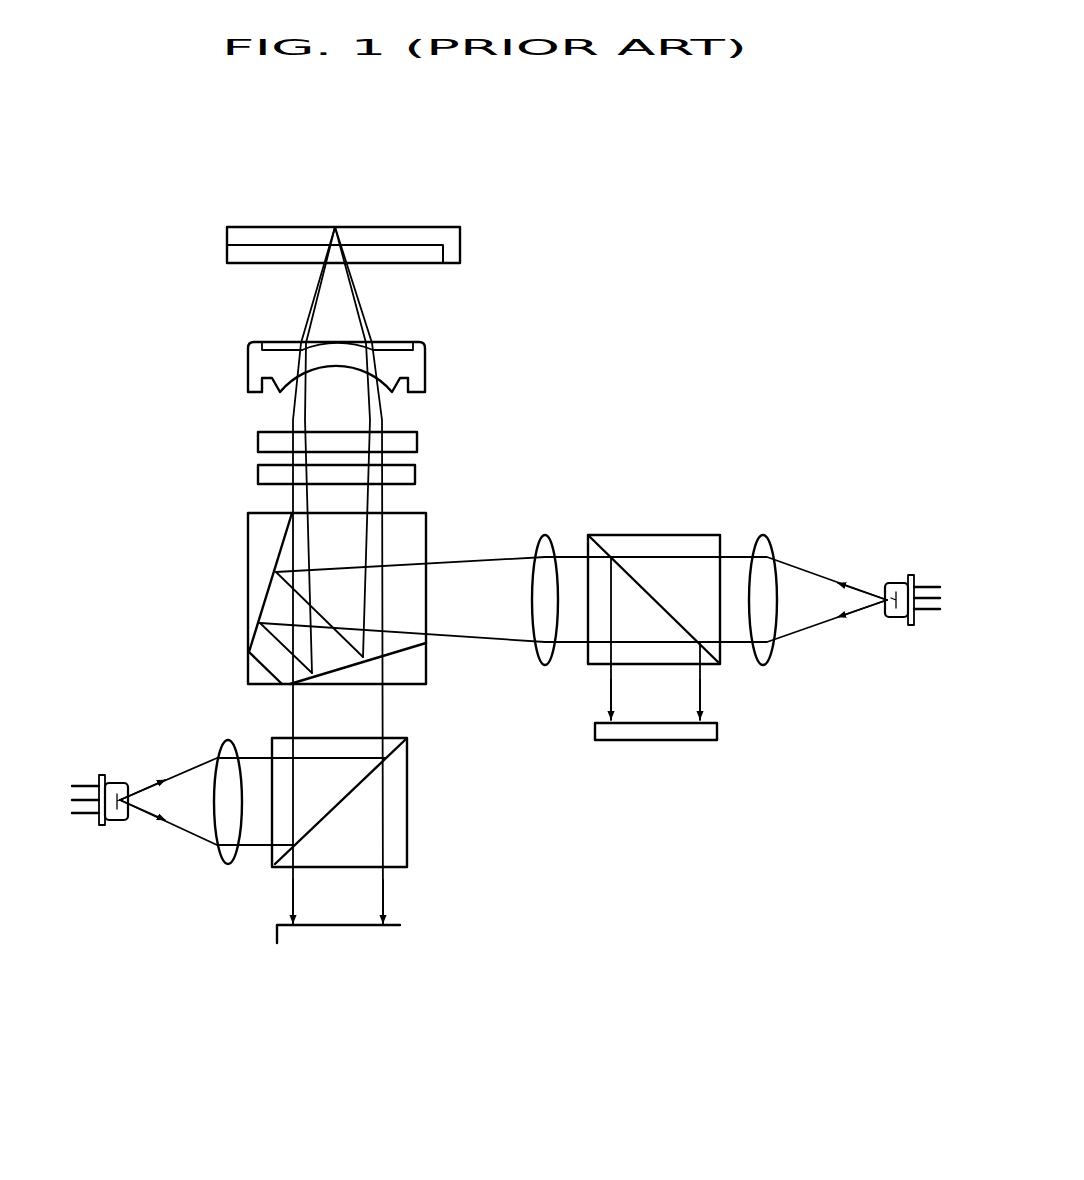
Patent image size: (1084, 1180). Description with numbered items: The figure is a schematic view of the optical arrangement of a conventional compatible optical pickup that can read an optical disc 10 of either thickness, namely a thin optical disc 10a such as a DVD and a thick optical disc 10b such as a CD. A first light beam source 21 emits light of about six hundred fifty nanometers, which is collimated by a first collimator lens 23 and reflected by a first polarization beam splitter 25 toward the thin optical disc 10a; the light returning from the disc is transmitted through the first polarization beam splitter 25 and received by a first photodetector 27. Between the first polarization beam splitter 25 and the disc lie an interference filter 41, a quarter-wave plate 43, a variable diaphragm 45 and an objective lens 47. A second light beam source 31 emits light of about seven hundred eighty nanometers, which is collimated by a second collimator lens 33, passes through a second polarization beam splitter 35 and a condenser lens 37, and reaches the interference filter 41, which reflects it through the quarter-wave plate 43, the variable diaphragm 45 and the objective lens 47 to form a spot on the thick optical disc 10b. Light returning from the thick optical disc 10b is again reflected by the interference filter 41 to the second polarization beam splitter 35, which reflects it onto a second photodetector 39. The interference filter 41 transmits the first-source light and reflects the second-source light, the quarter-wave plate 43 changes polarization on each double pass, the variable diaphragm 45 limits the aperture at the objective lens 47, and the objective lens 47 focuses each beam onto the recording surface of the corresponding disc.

The optical disc 10 is at (480, 220).
The thin optical disc 10a is at (242, 255).
The thick optical disc 10b is at (243, 232).
The first light beam source 21 is at (117, 823).
The first collimator lens 23 is at (223, 862).
The first polarization beam splitter 25 is at (273, 748).
The first photodetector 27 is at (322, 938).
The second light beam source 31 is at (893, 625).
The second collimator lens 33 is at (765, 543).
The second polarization beam splitter 35 is at (660, 542).
The condenser lens 37 is at (547, 547).
The second photodetector 39 is at (650, 740).
The interference filter 41 is at (258, 553).
The quarter-wave plate 43 is at (415, 480).
The variable diaphragm 45 is at (417, 441).
The objective lens 47 is at (420, 366).